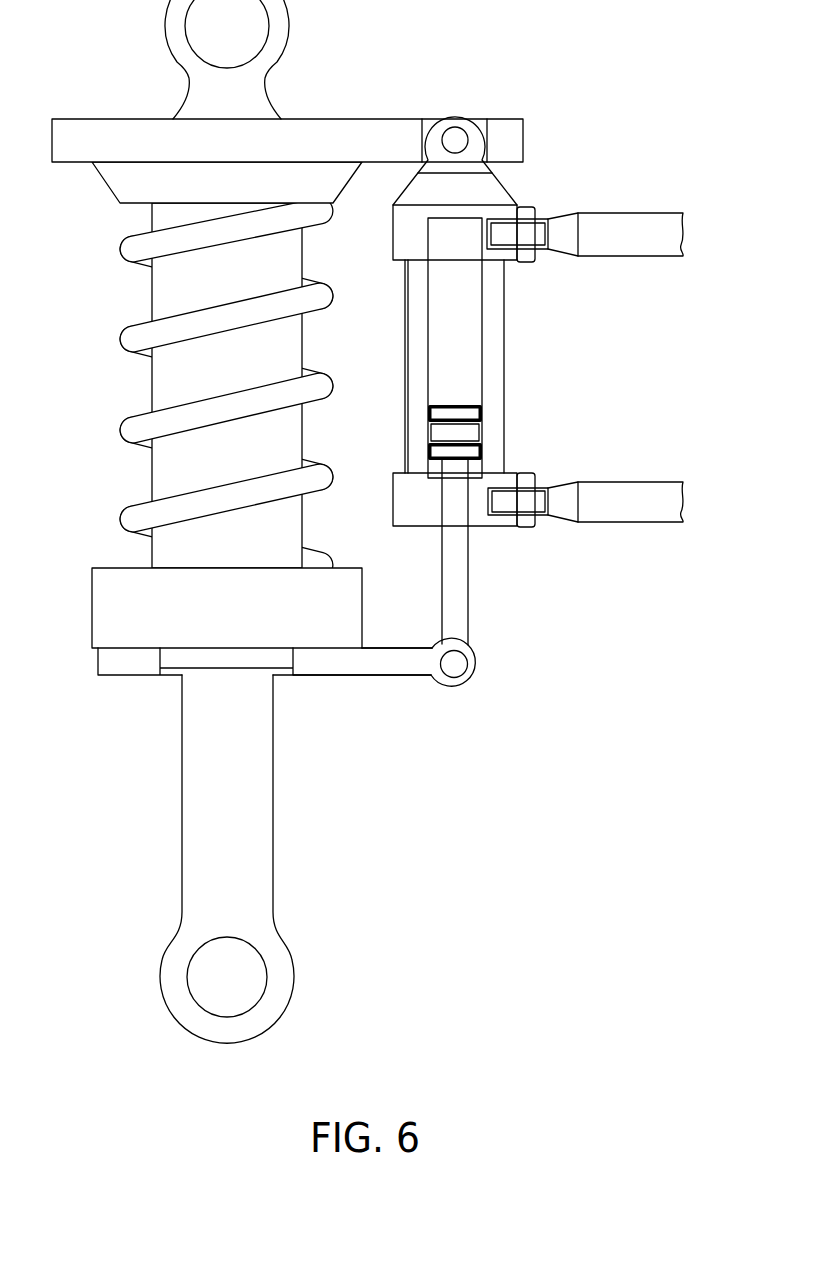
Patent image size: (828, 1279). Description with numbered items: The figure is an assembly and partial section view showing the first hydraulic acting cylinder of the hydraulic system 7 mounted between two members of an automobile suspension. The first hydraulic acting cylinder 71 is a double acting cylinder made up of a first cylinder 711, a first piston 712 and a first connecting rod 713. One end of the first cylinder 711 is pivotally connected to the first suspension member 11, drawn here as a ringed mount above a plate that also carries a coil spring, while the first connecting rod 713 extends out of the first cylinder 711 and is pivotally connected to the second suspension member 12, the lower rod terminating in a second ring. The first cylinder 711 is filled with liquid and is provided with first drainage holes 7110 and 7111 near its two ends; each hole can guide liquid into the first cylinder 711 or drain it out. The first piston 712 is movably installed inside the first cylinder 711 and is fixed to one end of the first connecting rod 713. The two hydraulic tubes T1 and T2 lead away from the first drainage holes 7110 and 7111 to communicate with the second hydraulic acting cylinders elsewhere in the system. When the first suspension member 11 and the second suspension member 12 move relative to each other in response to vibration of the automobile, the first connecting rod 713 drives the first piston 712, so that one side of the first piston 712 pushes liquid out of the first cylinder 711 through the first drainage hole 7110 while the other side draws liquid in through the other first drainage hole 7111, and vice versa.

The hydraulic system 7 is at (488, 388).
The first suspension member 11 is at (247, 88).
The second suspension member 12 is at (250, 760).
The first hydraulic acting cylinder 71 is at (512, 375).
The first cylinder 711 is at (490, 308).
The first piston 712 is at (470, 433).
The first connecting rod 713 is at (452, 583).
The first drainage hole 7110 is at (485, 230).
The first drainage hole 7111 is at (475, 505).
The hydraulic tube T1 is at (648, 246).
The hydraulic tube T2 is at (643, 515).